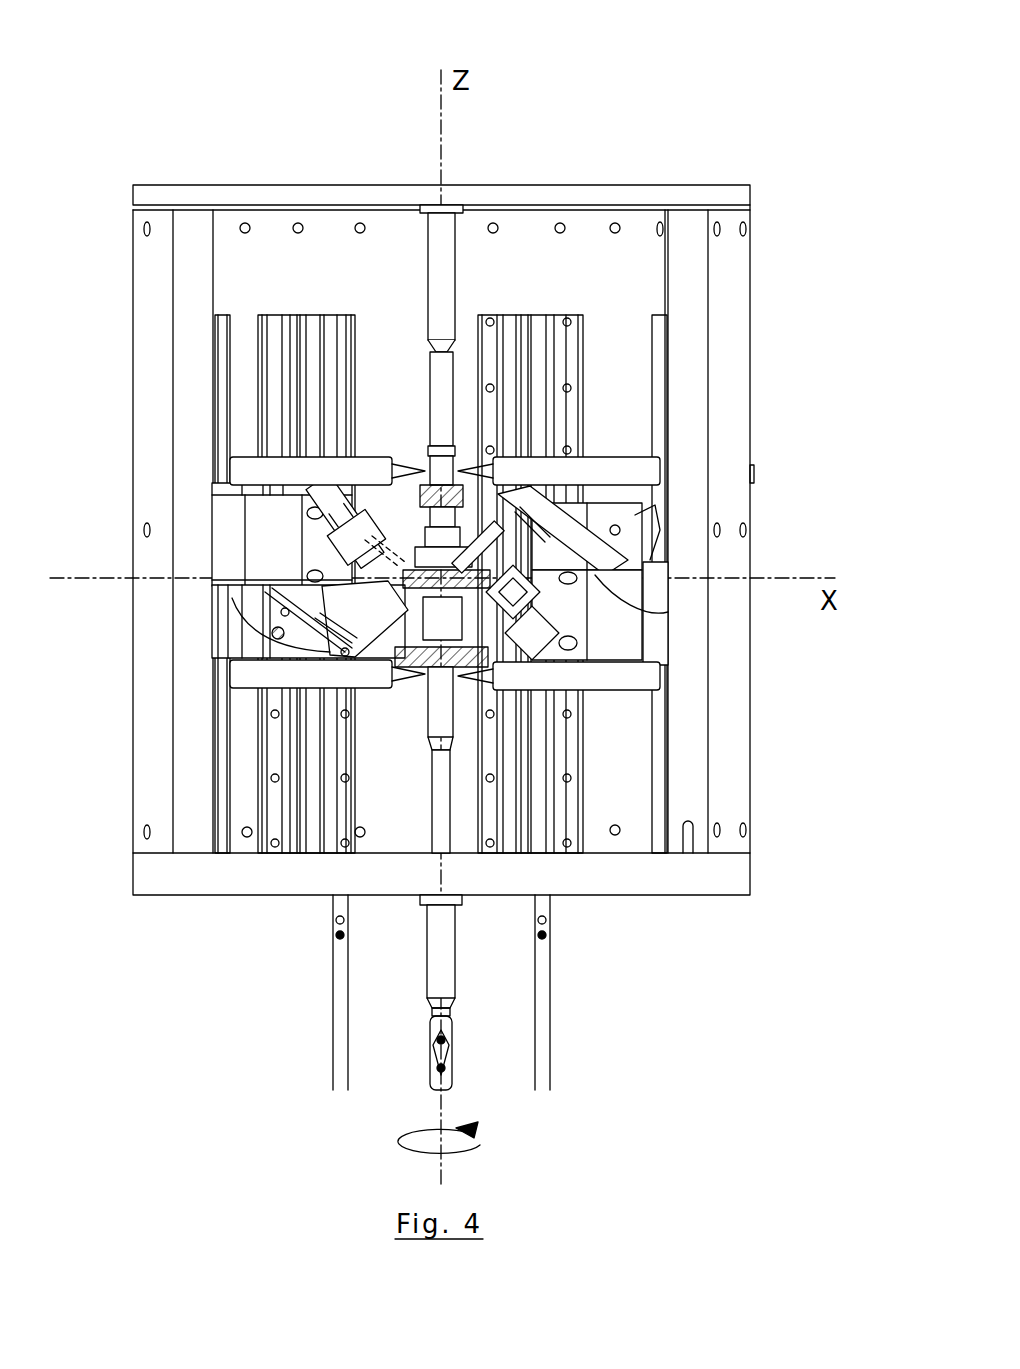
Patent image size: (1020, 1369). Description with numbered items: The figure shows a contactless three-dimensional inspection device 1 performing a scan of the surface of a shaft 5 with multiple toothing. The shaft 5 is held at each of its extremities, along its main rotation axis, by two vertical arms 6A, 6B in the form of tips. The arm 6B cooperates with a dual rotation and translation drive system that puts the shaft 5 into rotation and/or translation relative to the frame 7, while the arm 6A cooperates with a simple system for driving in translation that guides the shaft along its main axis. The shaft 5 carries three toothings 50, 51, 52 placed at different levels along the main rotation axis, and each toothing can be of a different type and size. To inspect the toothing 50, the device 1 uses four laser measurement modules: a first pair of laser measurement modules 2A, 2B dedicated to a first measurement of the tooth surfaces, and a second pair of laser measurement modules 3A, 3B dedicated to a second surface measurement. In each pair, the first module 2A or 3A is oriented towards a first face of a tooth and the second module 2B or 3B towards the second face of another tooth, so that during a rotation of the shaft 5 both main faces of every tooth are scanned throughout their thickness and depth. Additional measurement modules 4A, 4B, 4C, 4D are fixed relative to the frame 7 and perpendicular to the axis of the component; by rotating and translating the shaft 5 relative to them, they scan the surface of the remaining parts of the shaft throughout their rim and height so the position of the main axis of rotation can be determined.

The contactless three-dimensional inspection device 1 is at (111, 215).
The laser measurement module 2A is at (620, 528).
The laser measurement module 2B is at (600, 614).
The laser measurement module 3A is at (325, 508).
The laser measurement module 3B is at (290, 632).
The additional measurement module 4A is at (605, 462).
The additional measurement module 4B is at (625, 686).
The additional measurement module 4C is at (265, 680).
The additional measurement module 4D is at (290, 458).
The shaft with multiple toothing 5 is at (455, 368).
The vertical arm 6A is at (428, 275).
The vertical arm 6B is at (425, 818).
The frame 7 is at (737, 886).
The toothing 50 is at (395, 570).
The toothing 51 is at (565, 505).
The toothing 52 is at (405, 685).